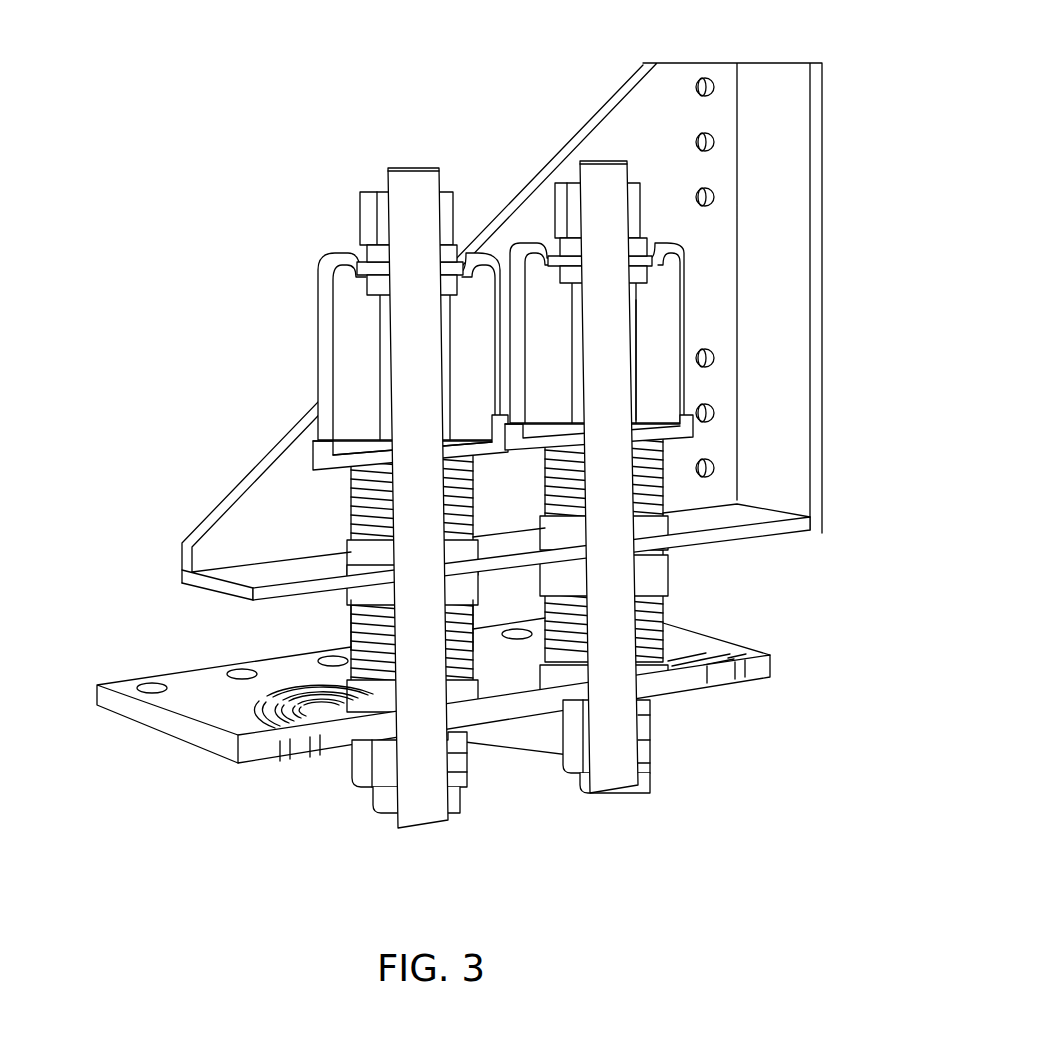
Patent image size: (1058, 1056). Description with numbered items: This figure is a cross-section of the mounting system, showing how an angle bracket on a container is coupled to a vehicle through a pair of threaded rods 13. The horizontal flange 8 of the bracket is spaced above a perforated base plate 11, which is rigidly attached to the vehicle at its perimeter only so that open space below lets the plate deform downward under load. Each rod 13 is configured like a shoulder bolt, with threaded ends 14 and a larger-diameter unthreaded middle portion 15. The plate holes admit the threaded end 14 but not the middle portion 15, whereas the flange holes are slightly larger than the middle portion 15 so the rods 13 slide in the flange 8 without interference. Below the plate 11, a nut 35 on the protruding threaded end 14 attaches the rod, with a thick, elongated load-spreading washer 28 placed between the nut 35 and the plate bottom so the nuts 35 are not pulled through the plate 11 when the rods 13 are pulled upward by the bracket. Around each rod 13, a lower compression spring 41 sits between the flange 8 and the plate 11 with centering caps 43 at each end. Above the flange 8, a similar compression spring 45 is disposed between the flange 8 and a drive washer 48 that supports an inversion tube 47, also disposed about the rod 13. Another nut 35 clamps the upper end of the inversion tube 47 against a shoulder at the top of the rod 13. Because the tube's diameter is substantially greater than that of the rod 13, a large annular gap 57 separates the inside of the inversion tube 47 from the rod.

The horizontal flange 8 is at (197, 578).
The perforated base plate 11 is at (175, 730).
The threaded rod 13 is at (596, 162).
The threaded end 14 is at (643, 207).
The unthreaded middle portion 15 is at (447, 505).
The load-spreading washer 28 is at (667, 707).
The nut 35 is at (366, 222).
The lower compression spring 41 is at (317, 632).
The centering cap 43 is at (348, 597).
The upper compression spring 45 is at (320, 507).
The inversion tube 47 is at (318, 320).
The drive washer 48 is at (312, 450).
The annular gap 57 is at (657, 288).